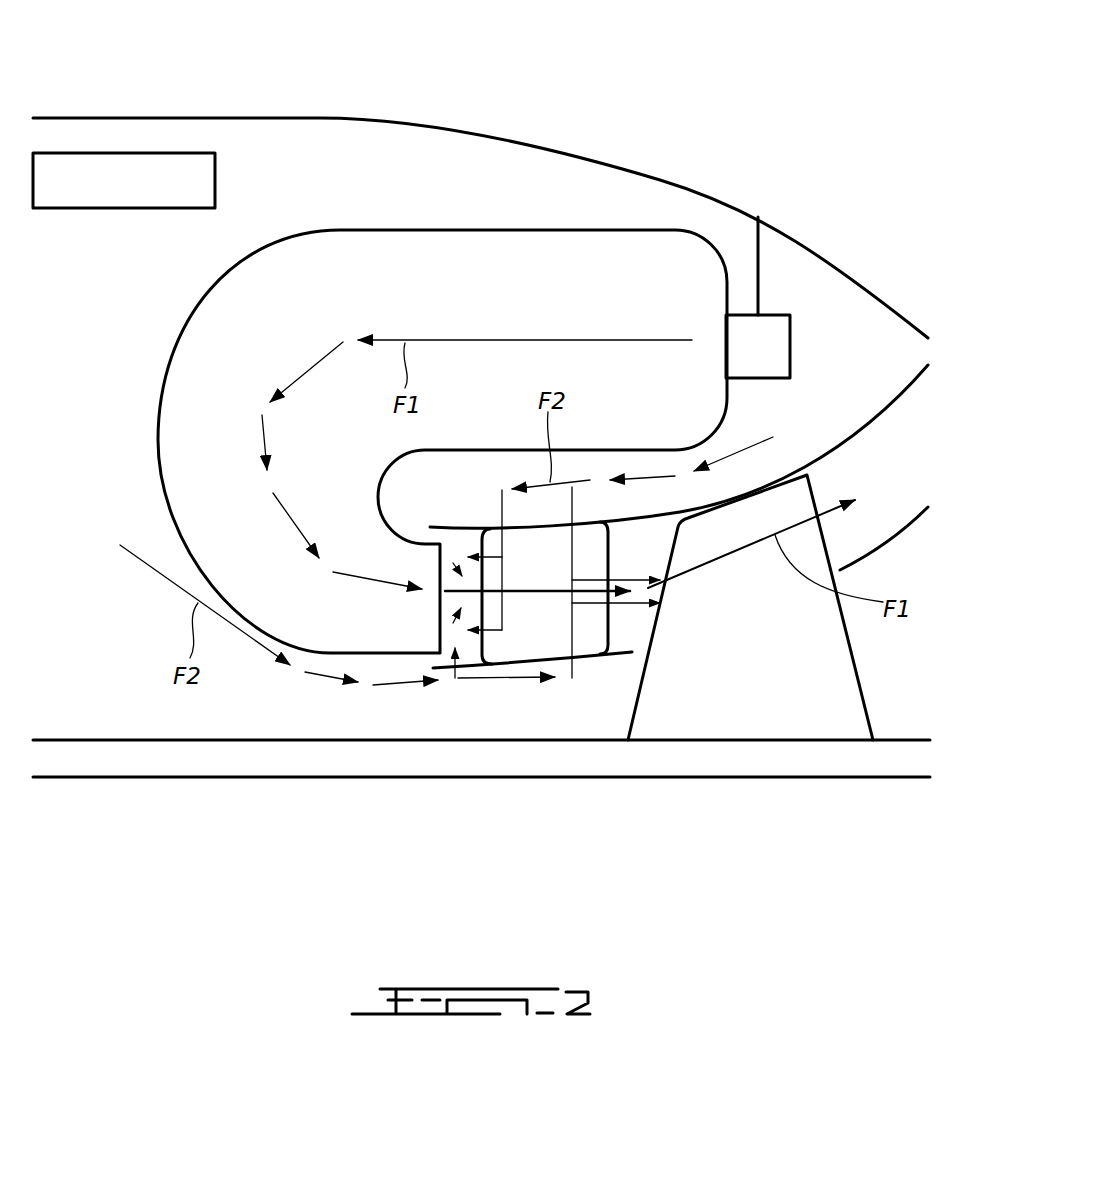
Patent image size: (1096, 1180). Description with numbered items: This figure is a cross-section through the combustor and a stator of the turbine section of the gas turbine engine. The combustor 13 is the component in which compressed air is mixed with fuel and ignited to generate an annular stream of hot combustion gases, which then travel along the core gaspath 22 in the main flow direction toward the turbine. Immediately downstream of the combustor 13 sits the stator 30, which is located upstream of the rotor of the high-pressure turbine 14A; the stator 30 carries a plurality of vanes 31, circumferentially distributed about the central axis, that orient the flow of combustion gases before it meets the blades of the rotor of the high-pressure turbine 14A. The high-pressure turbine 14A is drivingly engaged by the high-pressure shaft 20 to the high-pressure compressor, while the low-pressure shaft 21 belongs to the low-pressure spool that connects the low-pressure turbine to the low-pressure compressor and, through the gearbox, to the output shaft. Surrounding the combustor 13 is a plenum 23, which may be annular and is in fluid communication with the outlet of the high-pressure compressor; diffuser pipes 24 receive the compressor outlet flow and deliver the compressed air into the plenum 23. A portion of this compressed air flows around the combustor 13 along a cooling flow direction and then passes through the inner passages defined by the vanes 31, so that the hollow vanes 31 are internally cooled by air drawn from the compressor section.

The combustor 13 is at (553, 255).
The high-pressure turbine 14A is at (780, 700).
The high-pressure shaft 20 is at (137, 777).
The low-pressure shaft 21 is at (92, 740).
The core gaspath 22 is at (903, 443).
The plenum 23 is at (406, 181).
The diffuser pipes 24 is at (125, 153).
The stator 30 is at (517, 700).
The vanes 31 is at (548, 617).